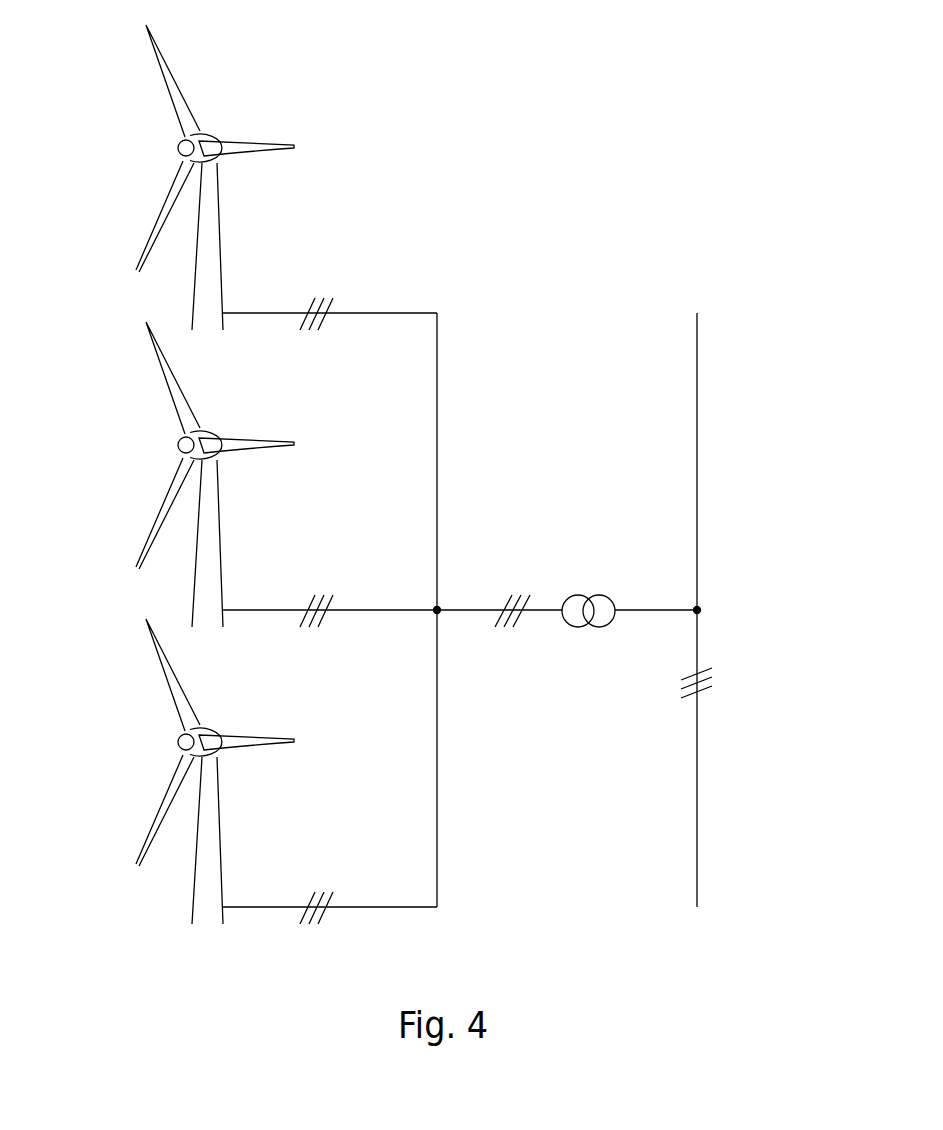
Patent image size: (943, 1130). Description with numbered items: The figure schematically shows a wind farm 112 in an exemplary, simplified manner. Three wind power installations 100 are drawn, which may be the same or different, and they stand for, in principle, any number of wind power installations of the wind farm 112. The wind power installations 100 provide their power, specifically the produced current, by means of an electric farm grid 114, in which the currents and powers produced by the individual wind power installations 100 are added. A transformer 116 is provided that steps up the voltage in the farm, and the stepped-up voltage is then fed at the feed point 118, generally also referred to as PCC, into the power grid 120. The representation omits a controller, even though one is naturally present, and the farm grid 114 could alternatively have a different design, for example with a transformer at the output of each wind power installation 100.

The wind power installation 100 is at (212, 233).
The wind farm 112 is at (510, 146).
The electric farm grid 114 is at (458, 611).
The transformer 116 is at (590, 594).
The feed point 118 is at (708, 591).
The power grid 120 is at (697, 345).